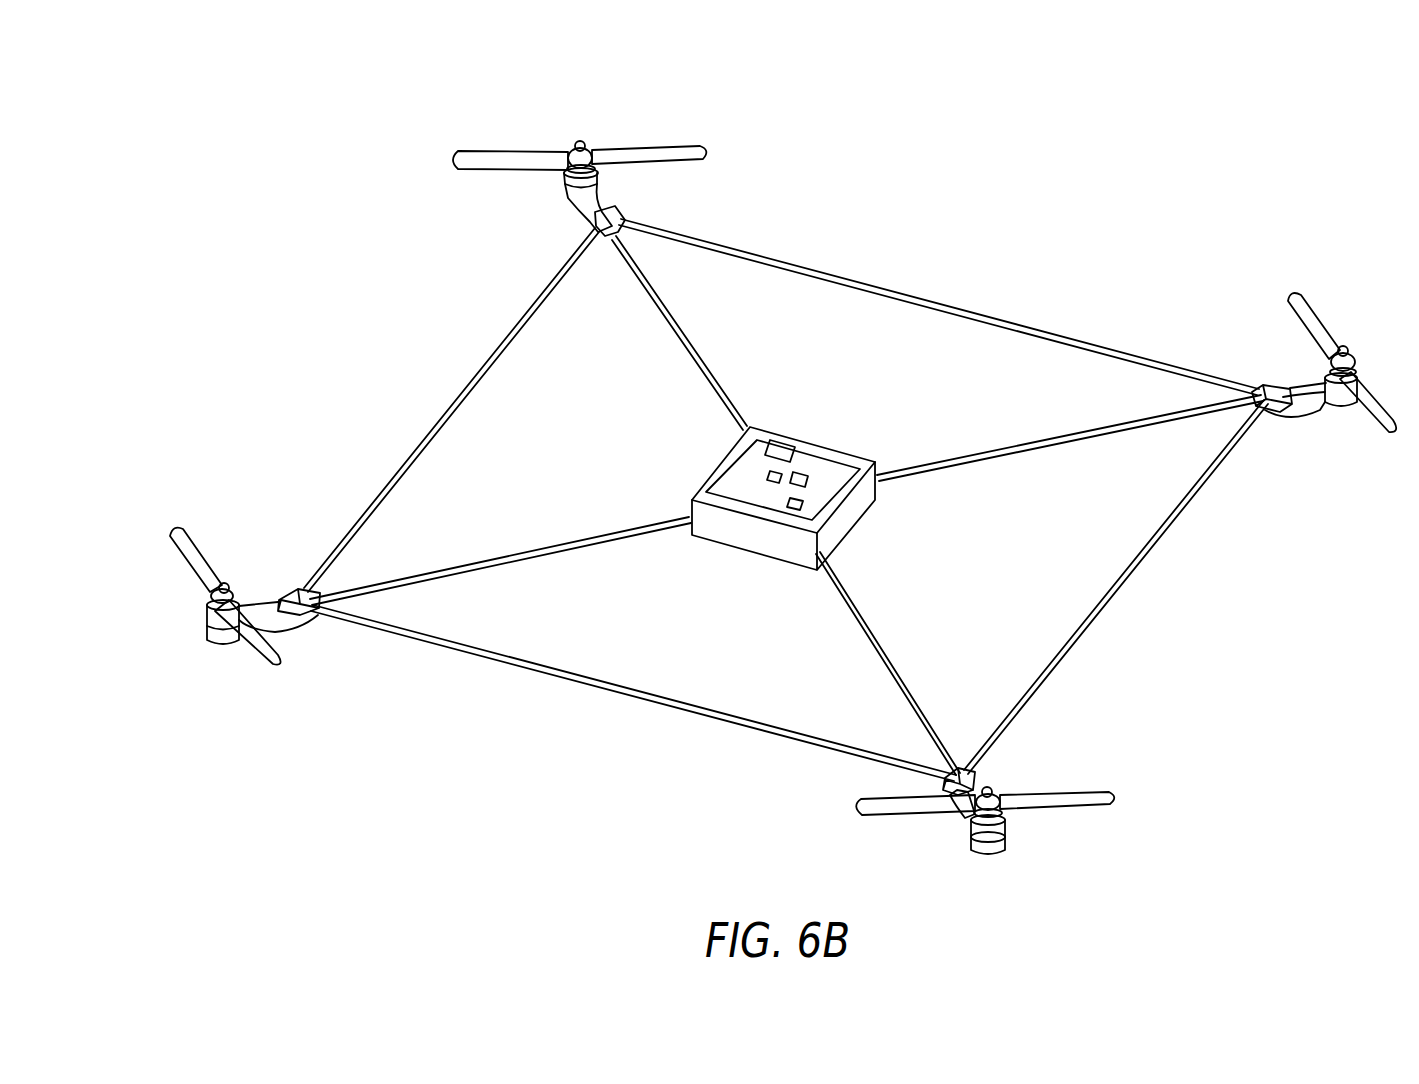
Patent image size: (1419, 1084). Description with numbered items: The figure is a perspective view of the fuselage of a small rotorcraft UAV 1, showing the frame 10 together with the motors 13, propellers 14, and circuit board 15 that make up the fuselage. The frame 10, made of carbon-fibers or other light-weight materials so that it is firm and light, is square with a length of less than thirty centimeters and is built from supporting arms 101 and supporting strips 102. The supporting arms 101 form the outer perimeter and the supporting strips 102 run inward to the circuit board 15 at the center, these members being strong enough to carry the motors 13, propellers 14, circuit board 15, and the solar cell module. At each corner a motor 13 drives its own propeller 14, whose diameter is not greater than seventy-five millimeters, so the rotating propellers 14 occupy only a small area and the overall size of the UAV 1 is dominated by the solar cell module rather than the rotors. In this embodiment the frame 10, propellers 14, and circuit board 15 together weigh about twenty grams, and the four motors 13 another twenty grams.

The UAV 1 is at (1372, 118).
The frame 10 is at (970, 275).
The supporting arms 101 is at (812, 265).
The supporting strips 102 is at (697, 372).
The motor 13 is at (580, 205).
The propeller 14 is at (543, 160).
The circuit board 15 is at (815, 445).